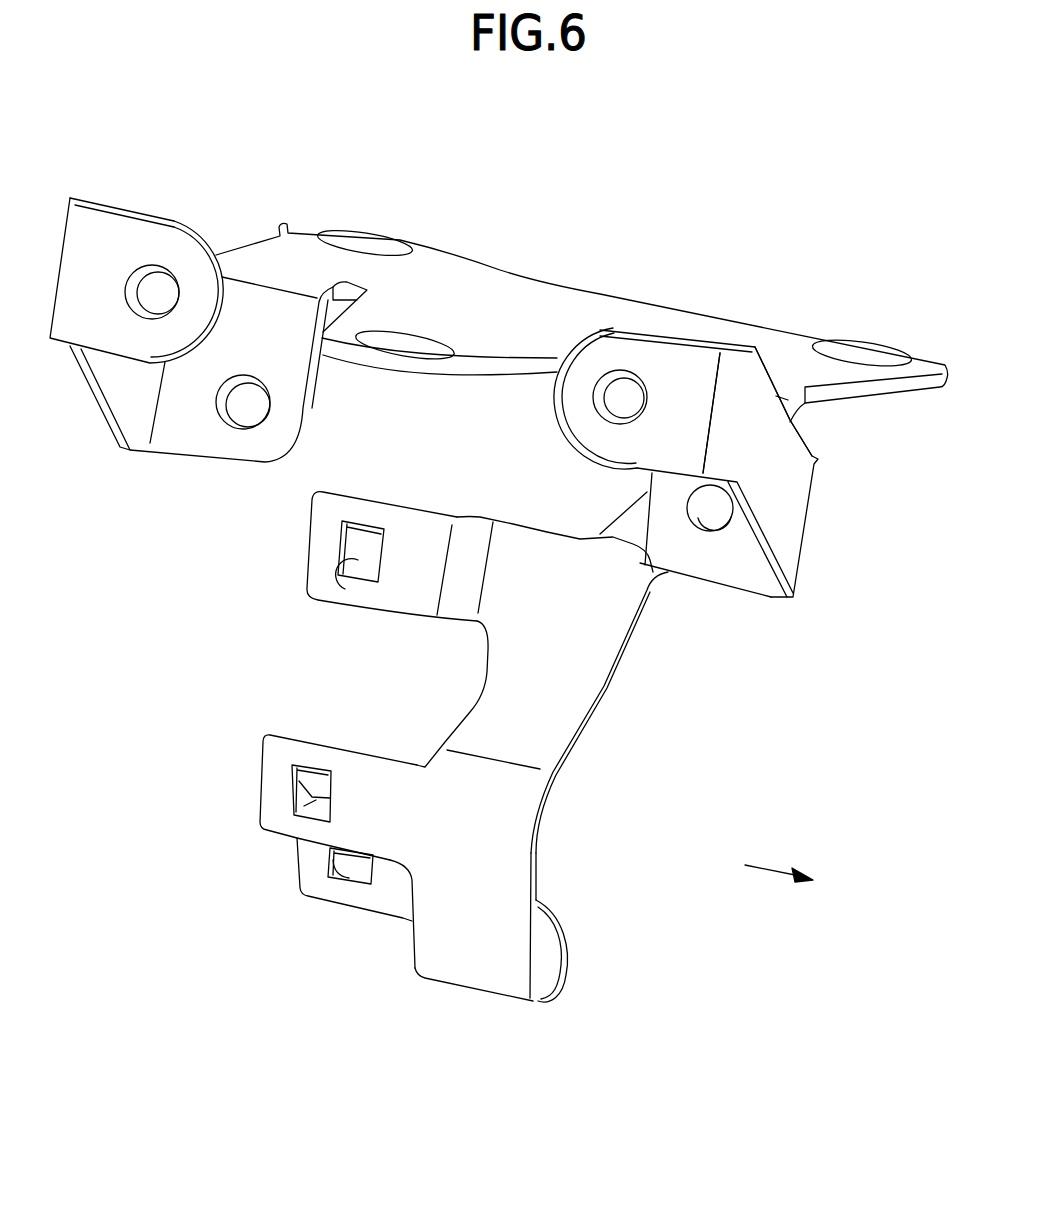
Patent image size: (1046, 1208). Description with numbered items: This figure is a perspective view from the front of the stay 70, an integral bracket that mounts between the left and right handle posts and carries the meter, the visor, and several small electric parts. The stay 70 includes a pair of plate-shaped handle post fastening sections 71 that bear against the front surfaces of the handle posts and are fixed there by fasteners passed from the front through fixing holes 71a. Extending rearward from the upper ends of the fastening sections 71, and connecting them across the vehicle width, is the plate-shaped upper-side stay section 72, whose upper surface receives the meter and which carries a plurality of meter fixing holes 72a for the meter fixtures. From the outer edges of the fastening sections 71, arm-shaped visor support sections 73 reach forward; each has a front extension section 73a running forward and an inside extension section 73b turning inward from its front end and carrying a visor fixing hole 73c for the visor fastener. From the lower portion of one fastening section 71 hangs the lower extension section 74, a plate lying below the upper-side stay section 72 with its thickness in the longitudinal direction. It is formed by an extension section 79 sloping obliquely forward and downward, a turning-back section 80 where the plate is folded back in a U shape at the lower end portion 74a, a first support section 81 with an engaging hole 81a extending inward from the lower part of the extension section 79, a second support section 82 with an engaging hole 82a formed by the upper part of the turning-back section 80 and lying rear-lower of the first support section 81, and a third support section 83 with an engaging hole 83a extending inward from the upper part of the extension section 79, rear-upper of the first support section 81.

The stay 70 is at (638, 154).
The handle post fastening section 71 is at (195, 450).
The fixing hole 71a is at (245, 410).
The upper-side stay section 72 is at (492, 293).
The meter fixing hole 72a is at (363, 243).
The visor support section 73 is at (157, 198).
The front extension section 73a is at (90, 390).
The inside extension section 73b is at (115, 230).
The visor fixing hole 73c is at (157, 287).
The lower extension section 74 is at (542, 746).
The lower end portion 74a is at (473, 995).
The extension section 79 is at (507, 842).
The turning-back section 80 is at (565, 942).
The first support section 81 is at (263, 762).
The engaging hole 81a is at (298, 795).
The second support section 82 is at (297, 873).
The engaging hole 82a is at (347, 880).
The third support section 83 is at (313, 578).
The engaging hole 83a is at (333, 595).